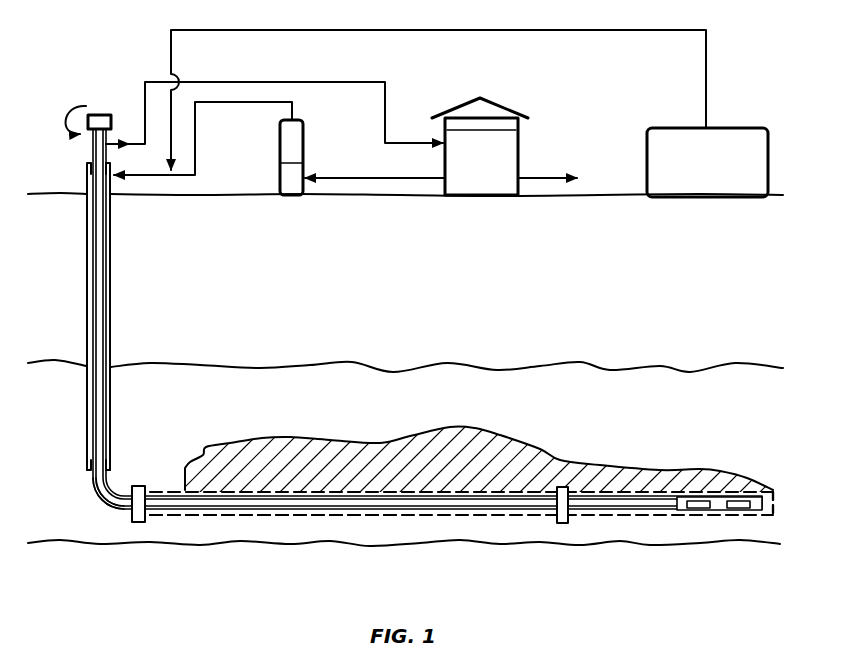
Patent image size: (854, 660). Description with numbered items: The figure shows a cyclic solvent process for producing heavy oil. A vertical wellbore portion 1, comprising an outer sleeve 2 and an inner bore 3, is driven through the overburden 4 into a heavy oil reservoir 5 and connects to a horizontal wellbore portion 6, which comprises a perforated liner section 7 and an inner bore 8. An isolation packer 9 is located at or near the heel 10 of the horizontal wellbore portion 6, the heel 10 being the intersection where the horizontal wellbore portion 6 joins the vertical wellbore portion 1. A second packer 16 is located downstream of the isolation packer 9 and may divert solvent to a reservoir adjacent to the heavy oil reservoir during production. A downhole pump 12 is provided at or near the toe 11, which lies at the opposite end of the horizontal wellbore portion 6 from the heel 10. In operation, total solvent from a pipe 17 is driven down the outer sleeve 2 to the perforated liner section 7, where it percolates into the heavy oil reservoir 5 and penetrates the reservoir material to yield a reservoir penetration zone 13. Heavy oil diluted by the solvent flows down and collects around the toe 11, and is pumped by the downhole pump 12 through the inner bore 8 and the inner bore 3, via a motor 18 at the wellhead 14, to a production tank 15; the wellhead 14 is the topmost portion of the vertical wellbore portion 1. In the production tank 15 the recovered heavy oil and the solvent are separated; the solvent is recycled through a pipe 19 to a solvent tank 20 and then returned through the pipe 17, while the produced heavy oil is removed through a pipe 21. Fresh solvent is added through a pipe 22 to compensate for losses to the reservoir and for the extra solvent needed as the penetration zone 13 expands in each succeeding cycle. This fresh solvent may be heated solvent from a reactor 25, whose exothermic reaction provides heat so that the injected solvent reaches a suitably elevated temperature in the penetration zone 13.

The vertical wellbore portion 1 is at (80, 246).
The outer sleeve 2 is at (87, 308).
The inner bore 3 is at (88, 422).
The overburden 4 is at (630, 297).
The heavy oil reservoir 5 is at (630, 426).
The horizontal wellbore portion 6 is at (343, 520).
The perforated liner section 7 is at (243, 524).
The inner bore 8 is at (468, 510).
The isolation packer 9 is at (140, 524).
The heel 10 is at (97, 507).
The toe 11 is at (777, 493).
The downhole pump 12 is at (723, 512).
The reservoir penetration zone 13 is at (340, 438).
The wellhead 14 is at (80, 150).
The production tank 15 is at (515, 112).
The second packer 16 is at (563, 524).
The pipe 17 is at (235, 102).
The motor 18 is at (100, 113).
The pipe 19 is at (335, 178).
The solvent tank 20 is at (305, 130).
The pipe 21 is at (533, 178).
The pipe 22 is at (171, 50).
The reactor 25 is at (724, 128).